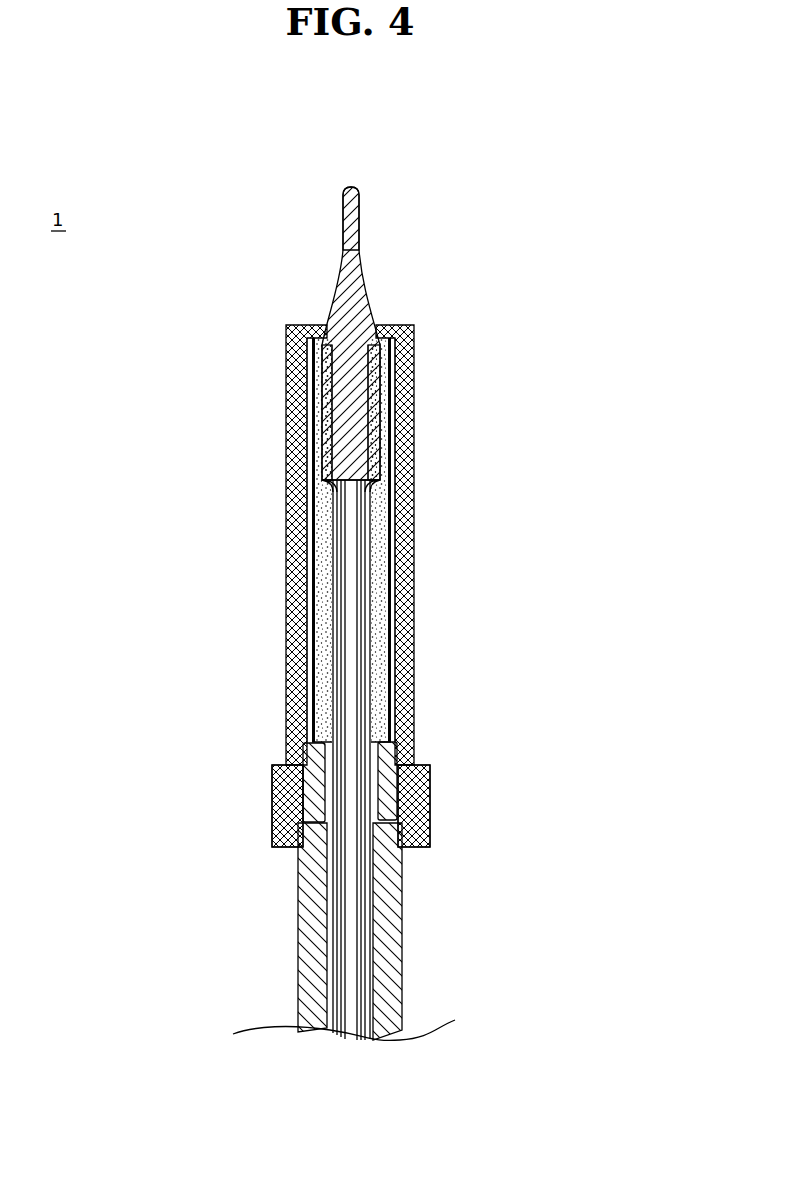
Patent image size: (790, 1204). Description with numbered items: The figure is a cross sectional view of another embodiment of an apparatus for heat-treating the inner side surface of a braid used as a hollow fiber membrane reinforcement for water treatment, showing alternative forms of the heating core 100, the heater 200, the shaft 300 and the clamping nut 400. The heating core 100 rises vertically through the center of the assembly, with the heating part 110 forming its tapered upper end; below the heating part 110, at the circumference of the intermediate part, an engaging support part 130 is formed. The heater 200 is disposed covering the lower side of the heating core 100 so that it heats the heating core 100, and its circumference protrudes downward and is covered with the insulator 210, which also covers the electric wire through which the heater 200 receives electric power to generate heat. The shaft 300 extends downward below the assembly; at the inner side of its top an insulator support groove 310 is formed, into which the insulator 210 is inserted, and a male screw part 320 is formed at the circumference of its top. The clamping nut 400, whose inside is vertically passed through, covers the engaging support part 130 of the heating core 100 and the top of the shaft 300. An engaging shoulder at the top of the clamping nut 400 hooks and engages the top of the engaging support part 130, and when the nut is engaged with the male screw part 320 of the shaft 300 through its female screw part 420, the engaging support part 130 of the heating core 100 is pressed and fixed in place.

The heating core 100 is at (343, 300).
The heating part 110 is at (358, 215).
The engaging support part 130 is at (333, 345).
The heater 200 is at (378, 380).
The insulator 210 is at (383, 556).
The shaft 300 is at (320, 933).
The insulator support groove 310 is at (323, 780).
The male screw part 320 is at (400, 790).
The clamping nut 400 is at (300, 497).
The female screw part 420 is at (351, 806).